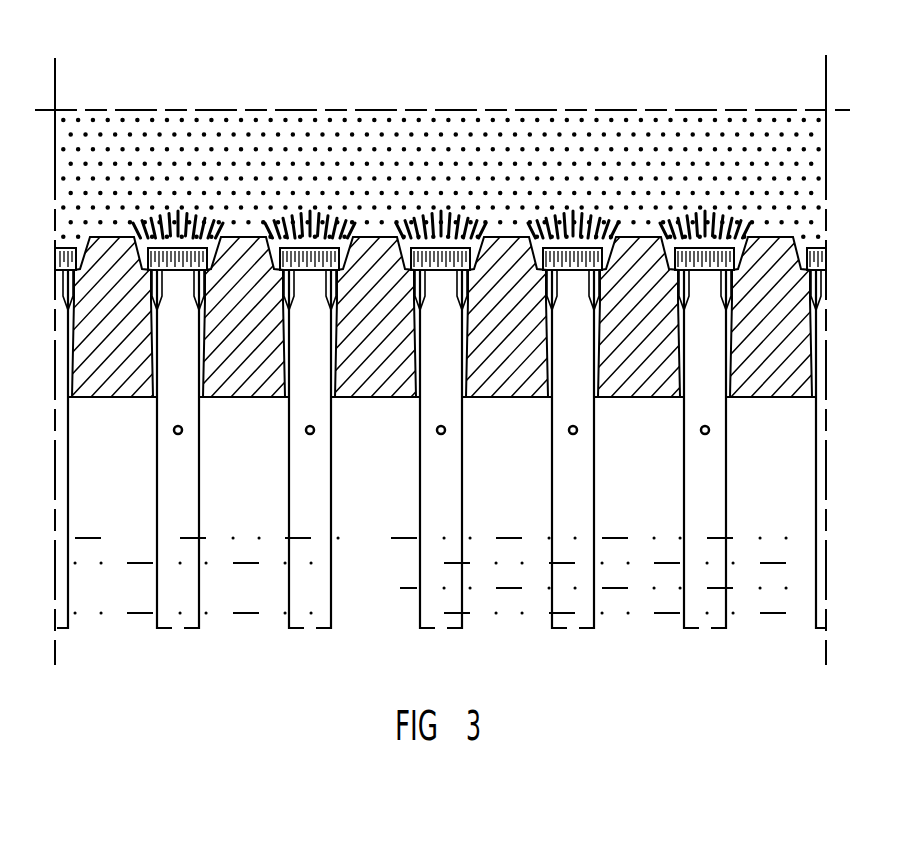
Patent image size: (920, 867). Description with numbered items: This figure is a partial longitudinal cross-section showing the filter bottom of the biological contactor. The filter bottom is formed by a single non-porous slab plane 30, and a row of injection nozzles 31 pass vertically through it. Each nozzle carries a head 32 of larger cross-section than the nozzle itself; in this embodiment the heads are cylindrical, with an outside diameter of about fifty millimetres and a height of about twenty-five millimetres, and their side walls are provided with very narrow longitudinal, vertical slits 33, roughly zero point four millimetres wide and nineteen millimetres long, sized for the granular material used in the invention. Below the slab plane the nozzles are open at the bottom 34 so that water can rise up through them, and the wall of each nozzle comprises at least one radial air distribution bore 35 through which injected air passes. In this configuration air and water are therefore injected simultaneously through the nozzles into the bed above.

The non-porous slab plane 30 is at (812, 173).
The injection nozzles 31 is at (760, 515).
The heads 32 is at (569, 246).
The longitudinal slits 33 is at (722, 263).
The open bottom 34 is at (587, 630).
The radial air distribution bore 35 is at (699, 431).